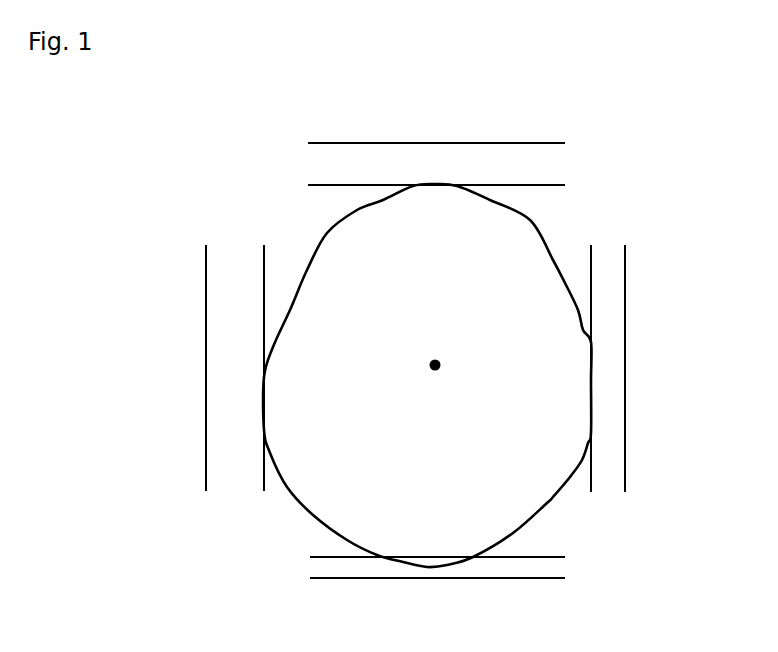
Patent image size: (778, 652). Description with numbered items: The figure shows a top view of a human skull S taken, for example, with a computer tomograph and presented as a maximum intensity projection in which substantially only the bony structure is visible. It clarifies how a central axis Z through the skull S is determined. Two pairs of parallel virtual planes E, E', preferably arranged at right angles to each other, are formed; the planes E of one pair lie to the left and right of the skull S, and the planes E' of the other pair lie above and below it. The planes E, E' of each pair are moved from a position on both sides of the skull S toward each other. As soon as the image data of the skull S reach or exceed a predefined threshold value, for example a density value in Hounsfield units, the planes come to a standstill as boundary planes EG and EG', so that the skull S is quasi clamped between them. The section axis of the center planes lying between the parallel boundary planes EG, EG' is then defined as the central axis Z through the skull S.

The skull S is at (530, 447).
The central axis Z is at (432, 362).
The virtual plane E is at (419, 363).
The boundary plane EG is at (421, 368).
The virtual plane E' is at (436, 348).
The boundary plane EG' is at (439, 349).